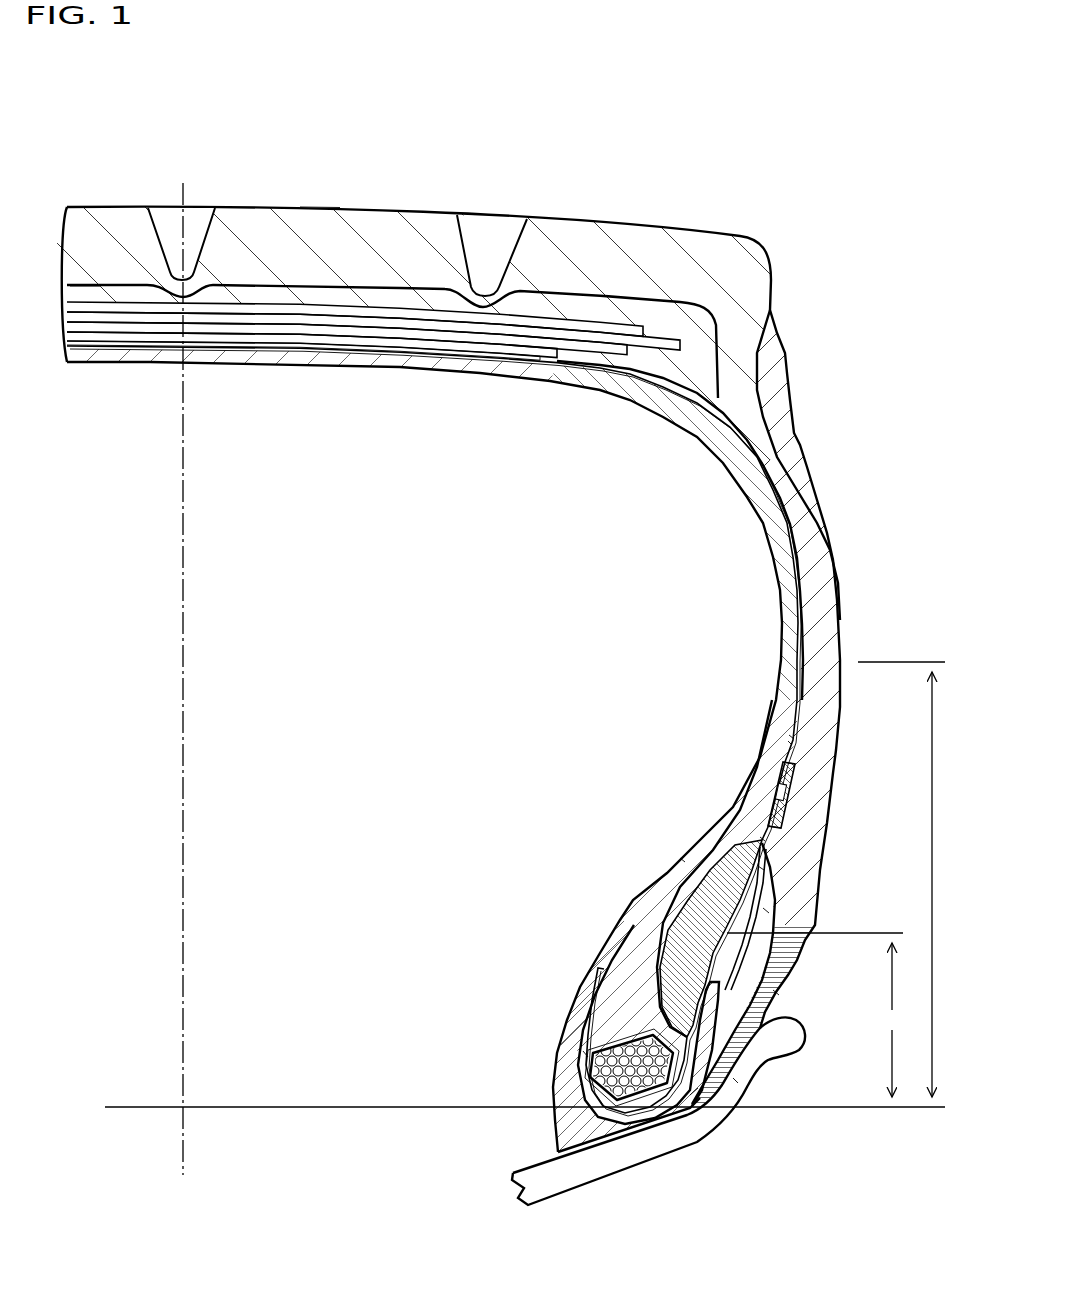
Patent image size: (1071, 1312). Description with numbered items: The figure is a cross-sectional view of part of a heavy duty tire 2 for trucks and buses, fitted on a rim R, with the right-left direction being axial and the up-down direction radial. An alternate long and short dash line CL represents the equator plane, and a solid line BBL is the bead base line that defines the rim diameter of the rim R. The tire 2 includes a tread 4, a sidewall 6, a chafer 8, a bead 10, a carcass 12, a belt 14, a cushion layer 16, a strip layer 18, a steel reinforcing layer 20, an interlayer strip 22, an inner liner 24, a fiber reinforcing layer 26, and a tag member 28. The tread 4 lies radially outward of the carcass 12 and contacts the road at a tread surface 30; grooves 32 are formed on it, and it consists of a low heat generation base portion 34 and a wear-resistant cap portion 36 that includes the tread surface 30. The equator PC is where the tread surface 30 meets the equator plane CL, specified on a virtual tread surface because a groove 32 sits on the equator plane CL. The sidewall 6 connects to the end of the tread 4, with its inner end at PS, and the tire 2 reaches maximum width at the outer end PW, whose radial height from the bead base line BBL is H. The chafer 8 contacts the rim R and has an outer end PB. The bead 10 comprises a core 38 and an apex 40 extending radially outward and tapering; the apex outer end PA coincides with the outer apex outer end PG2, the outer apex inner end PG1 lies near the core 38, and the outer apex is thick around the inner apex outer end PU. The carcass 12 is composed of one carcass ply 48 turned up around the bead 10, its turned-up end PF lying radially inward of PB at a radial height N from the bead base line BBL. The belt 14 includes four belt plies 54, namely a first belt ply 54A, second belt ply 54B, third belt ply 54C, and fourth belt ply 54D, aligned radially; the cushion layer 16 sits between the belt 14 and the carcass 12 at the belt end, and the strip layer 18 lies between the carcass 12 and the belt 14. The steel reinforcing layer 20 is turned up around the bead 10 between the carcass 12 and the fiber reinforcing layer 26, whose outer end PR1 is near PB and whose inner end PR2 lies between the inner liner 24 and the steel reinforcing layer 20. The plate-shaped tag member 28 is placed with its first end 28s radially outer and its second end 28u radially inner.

The heavy duty tire 2 is at (803, 189).
The tread 4 is at (448, 377).
The sidewall 6 is at (842, 569).
The chafer 8 is at (717, 1057).
The bead 10 is at (620, 903).
The carcass 12 is at (434, 731).
The belt 14 is at (373, 399).
The cushion layer 16 is at (677, 387).
The strip layer 18 is at (438, 358).
The steel reinforcing layer 20 is at (578, 1078).
The interlayer strip 22 is at (727, 953).
The inner liner 24 is at (626, 402).
The fiber reinforcing layer 26 is at (699, 1094).
The tag member 28 is at (828, 792).
The first end of tag member 28s is at (796, 760).
The second end of tag member 28u is at (784, 832).
The tread surface 30 is at (320, 206).
The groove 32 is at (175, 250).
The base portion 34 is at (385, 293).
The cap portion 36 is at (100, 233).
The core 38 is at (615, 1040).
The apex 40 is at (612, 958).
The carcass ply 48 is at (140, 350).
The belt ply 54 is at (373, 379).
The first belt ply 54A is at (220, 336).
The second belt ply 54B is at (275, 327).
The third belt ply 54C is at (315, 318).
The fourth belt ply 54D is at (197, 452).
The rim R is at (667, 1156).
The equator plane CL is at (183, 660).
The equator PC is at (183, 206).
The bead base line BBL is at (300, 1105).
The outer end of tire PW is at (841, 661).
The radial height of maximum width position H is at (942, 884).
The radial height of end of turned-up portion N is at (821, 1015).
The outer end of apex PA is at (792, 737).
The outer end of outer apex PG2 is at (852, 716).
The outer end of fiber reinforcing layer PR1 is at (764, 840).
The outer end of chafer PB is at (762, 868).
The end of turned-up portion PF is at (766, 911).
The inner end of sidewall PS is at (764, 1011).
The inner end of outer apex PG1 is at (735, 1080).
The outer end of inner apex PU is at (682, 860).
The inner end of fiber reinforcing layer PR2 is at (585, 1055).